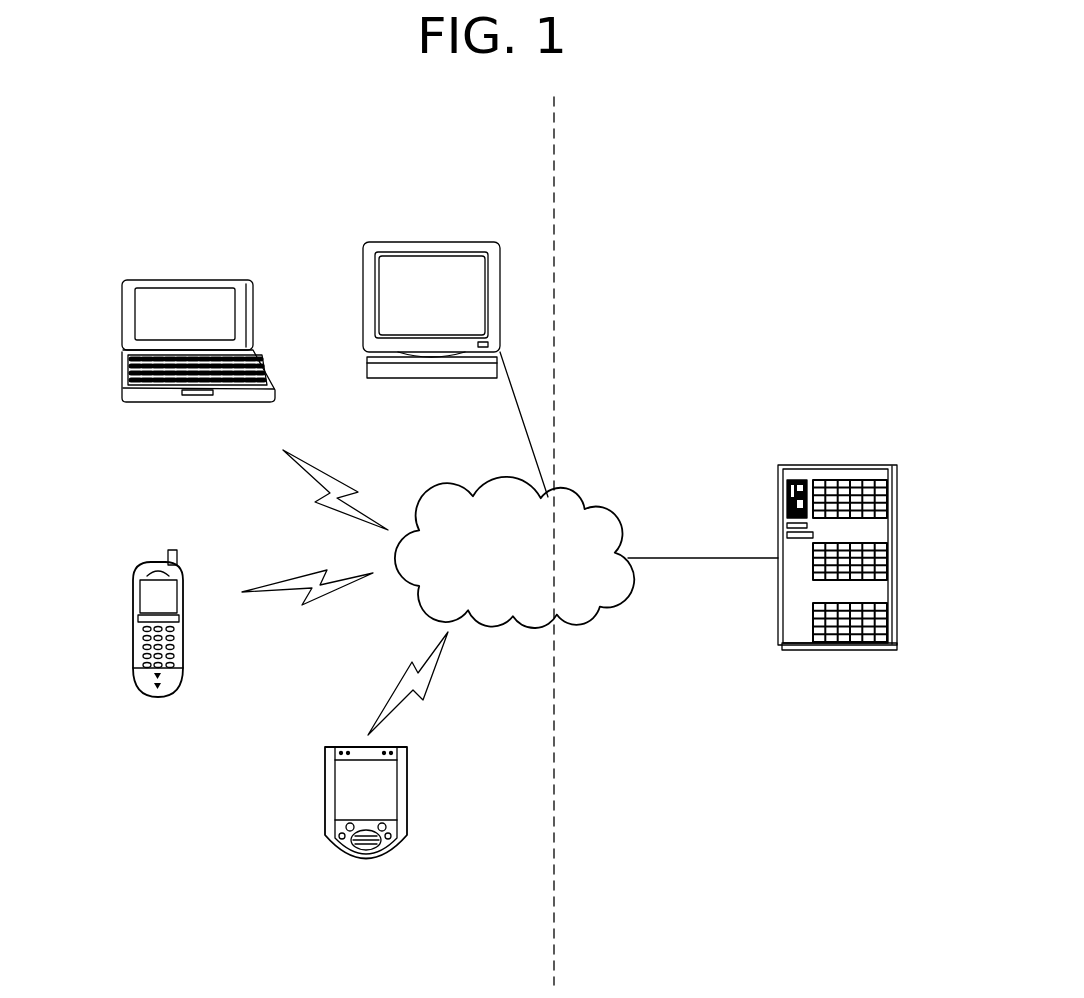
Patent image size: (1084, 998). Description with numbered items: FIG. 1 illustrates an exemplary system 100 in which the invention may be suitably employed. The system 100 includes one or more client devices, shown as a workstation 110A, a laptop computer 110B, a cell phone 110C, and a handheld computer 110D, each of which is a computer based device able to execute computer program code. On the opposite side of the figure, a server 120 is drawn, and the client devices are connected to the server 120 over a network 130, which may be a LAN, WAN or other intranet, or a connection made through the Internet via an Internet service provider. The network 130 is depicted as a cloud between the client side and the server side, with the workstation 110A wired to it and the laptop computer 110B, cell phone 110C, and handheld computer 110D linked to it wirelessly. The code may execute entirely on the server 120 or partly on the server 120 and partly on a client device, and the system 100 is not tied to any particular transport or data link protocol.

The system 100 is at (708, 274).
The workstation 110A is at (467, 241).
The laptop computer 110B is at (228, 280).
The cell phone 110C is at (138, 628).
The handheld computer 110D is at (410, 808).
The server 120 is at (900, 538).
The network 130 is at (612, 593).